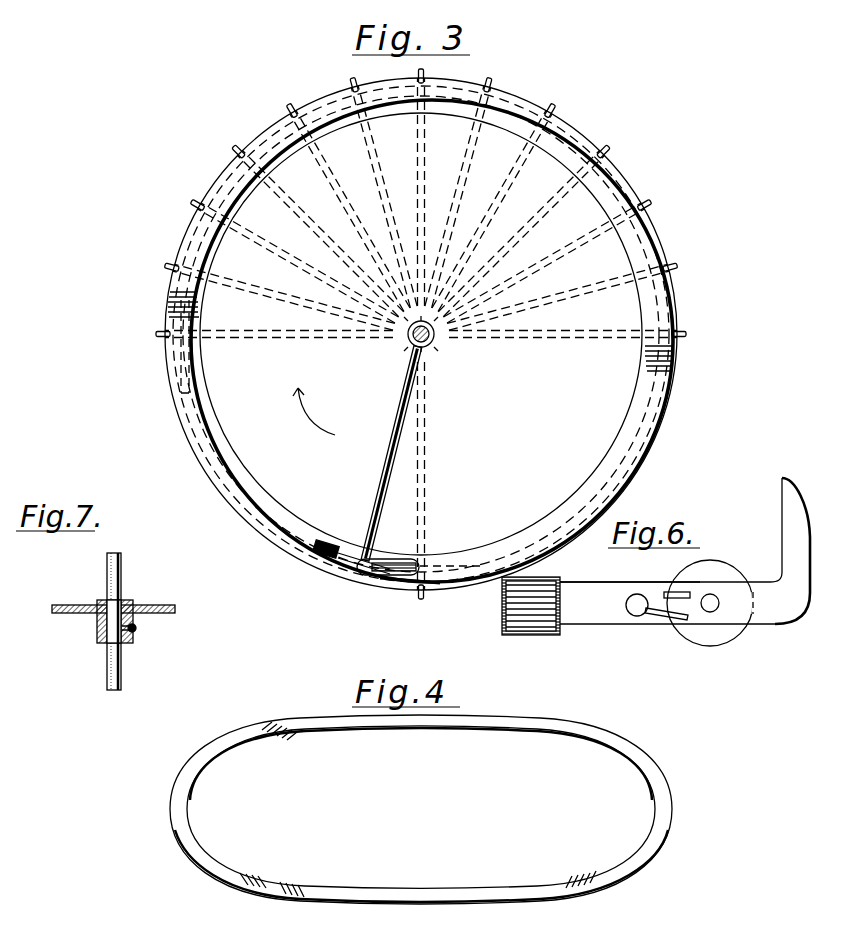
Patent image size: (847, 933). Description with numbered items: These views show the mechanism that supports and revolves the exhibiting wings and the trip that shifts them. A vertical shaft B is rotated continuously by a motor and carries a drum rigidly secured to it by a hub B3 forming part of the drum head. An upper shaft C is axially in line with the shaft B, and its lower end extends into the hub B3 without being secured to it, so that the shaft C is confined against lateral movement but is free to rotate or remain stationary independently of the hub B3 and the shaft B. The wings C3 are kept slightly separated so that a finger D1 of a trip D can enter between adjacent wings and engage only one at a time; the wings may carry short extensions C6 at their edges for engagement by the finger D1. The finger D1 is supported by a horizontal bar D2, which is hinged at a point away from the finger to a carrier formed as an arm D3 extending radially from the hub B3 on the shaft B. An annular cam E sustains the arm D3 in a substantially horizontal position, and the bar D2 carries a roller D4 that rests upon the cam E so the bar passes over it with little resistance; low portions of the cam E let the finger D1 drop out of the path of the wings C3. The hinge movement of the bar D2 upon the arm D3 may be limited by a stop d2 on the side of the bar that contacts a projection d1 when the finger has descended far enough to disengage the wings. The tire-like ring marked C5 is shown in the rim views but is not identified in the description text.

In FIG. 3, the vertical shaft B is at (410, 340).
In FIG. 7, the vertical shaft B is at (122, 664).
In FIG. 3, the hub B3 is at (431, 345).
In FIG. 7, the hub B3 is at (138, 630).
In FIG. 7, the shaft C is at (123, 592).
In FIG. 3, the wings C3 is at (414, 158).
In FIG. 3, the spoke clamp band C5 is at (228, 188).
In FIG. 3, the short extensions C6 is at (297, 103).
In FIG. 3, the trip D is at (317, 548).
In FIG. 6, the trip D is at (667, 618).
In FIG. 6, the finger D1 is at (790, 551).
In FIG. 3, the horizontal bar D2 is at (358, 569).
In FIG. 6, the horizontal bar D2 is at (610, 582).
In FIG. 3, the arm D3 is at (379, 494).
In FIG. 6, the arm D3 is at (531, 606).
In FIG. 3, the roller D4 is at (405, 558).
In FIG. 6, the roller D4 is at (710, 602).
In FIG. 6, the projection d1 is at (669, 592).
In FIG. 6, the stop d2 is at (628, 609).
In FIG. 3, the annular cam E is at (648, 449).
In FIG. 4, the annular cam E is at (187, 795).